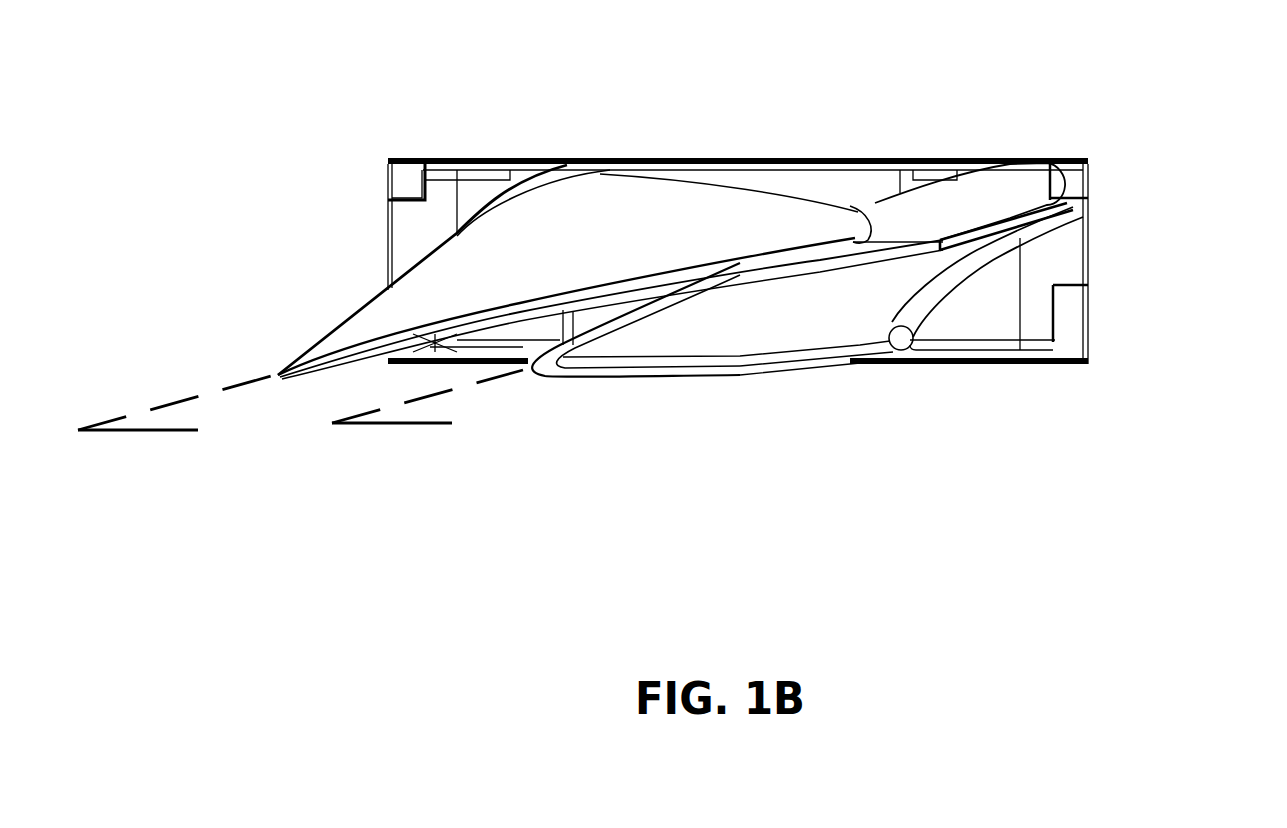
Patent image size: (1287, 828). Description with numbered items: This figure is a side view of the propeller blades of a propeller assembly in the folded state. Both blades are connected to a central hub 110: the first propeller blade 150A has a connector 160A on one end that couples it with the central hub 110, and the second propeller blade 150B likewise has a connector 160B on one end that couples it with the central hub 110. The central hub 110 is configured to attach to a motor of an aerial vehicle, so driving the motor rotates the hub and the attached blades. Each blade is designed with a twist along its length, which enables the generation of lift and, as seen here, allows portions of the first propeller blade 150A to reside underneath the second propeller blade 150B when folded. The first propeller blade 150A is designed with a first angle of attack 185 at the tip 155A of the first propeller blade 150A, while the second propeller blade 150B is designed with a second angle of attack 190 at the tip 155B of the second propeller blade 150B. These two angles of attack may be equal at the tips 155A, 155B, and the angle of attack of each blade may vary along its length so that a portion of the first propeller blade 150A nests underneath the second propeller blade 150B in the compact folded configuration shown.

The central hub 110 is at (790, 170).
The first propeller blade 150A is at (960, 200).
The second propeller blade 150B is at (600, 205).
The tip of the first propeller blade 155A is at (830, 258).
The tip of the second propeller blade 155B is at (694, 297).
The connector 160A is at (1065, 243).
The connector 160B is at (410, 240).
The first angle of attack 185 is at (428, 414).
The second angle of attack 190 is at (181, 417).